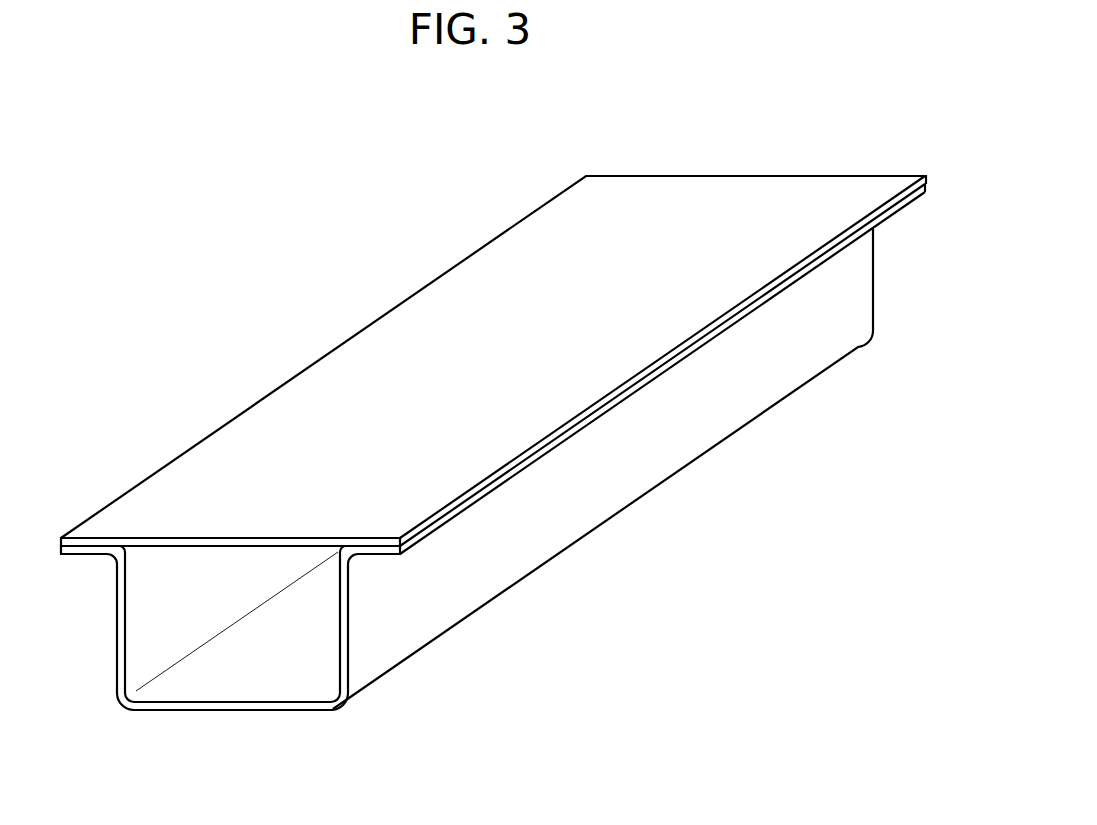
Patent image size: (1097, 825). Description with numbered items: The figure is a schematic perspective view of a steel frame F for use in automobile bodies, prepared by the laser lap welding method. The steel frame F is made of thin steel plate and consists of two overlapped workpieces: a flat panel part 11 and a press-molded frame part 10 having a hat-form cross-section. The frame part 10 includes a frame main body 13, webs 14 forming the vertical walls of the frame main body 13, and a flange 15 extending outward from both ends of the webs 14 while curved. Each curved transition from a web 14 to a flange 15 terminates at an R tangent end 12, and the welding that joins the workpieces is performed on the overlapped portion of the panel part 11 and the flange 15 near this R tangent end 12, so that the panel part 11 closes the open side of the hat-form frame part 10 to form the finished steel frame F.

The steel frame F is at (960, 81).
The frame part 10 is at (875, 273).
The panel part 11 is at (778, 215).
The R tangent end 12 is at (134, 560).
The frame main body 13 is at (243, 685).
The web 14 is at (116, 660).
The flange 15 is at (100, 562).